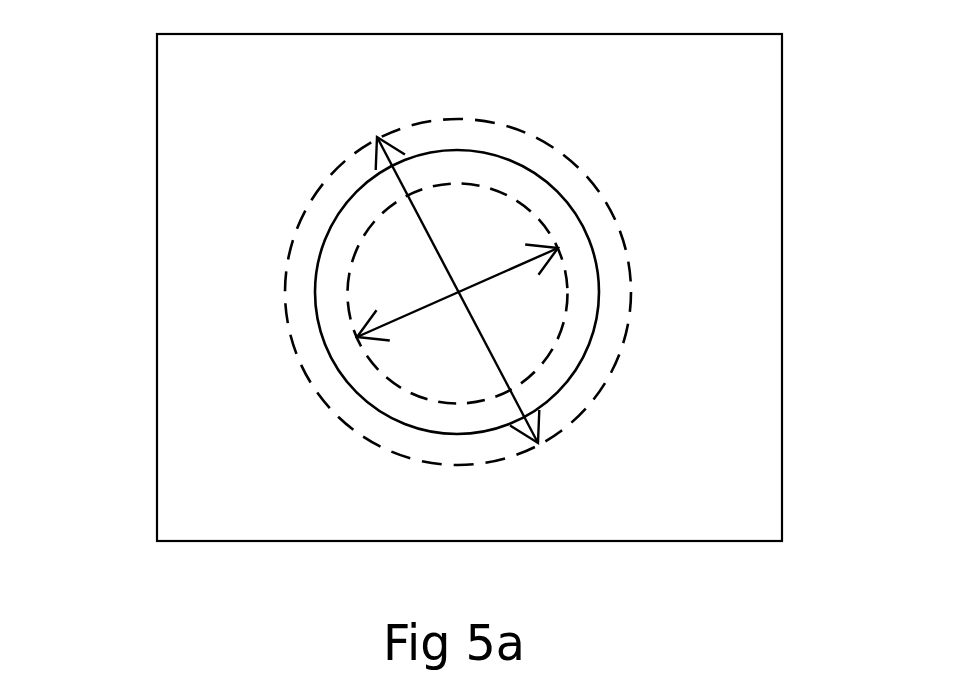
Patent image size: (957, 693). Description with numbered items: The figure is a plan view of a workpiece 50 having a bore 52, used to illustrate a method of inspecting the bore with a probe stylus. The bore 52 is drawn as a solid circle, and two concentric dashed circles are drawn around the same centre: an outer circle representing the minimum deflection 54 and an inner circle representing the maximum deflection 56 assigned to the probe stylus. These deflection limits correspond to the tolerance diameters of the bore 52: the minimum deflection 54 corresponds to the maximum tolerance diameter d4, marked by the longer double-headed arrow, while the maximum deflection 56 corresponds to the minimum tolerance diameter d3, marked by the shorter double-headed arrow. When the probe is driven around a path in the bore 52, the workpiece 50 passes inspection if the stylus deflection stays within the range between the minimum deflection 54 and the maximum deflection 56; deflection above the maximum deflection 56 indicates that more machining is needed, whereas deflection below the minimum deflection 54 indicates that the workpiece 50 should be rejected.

The workpiece 50 is at (722, 88).
The minimum deflection 54 is at (585, 174).
The bore 52 is at (597, 262).
The maximum deflection 56 is at (557, 337).
The maximum tolerance diameter d4 is at (432, 250).
The minimum tolerance diameter d3 is at (415, 310).